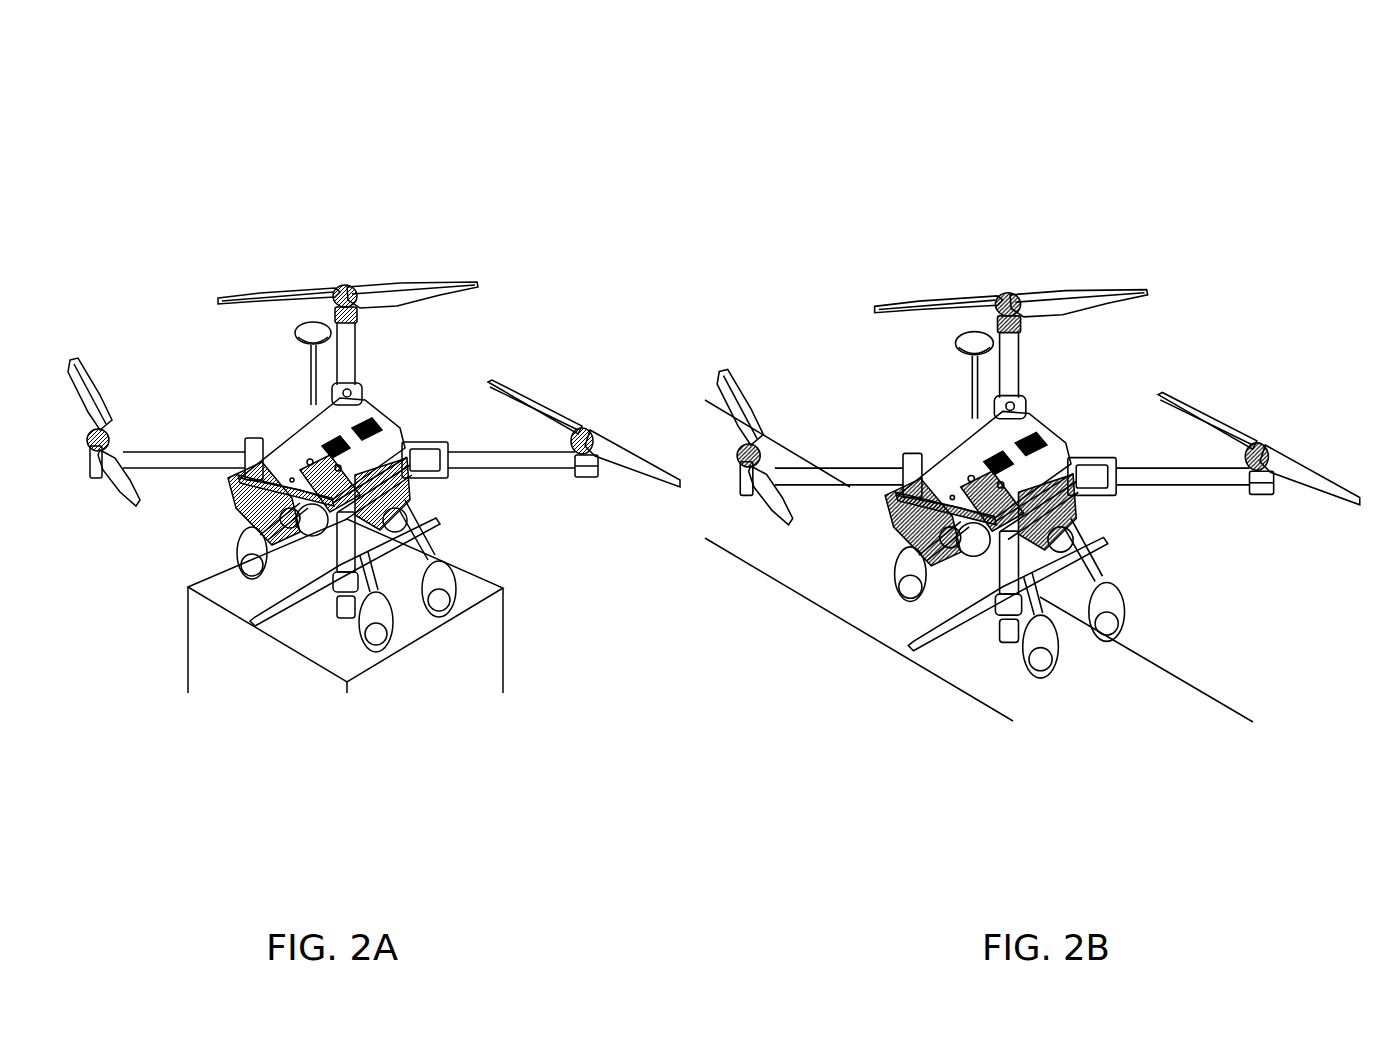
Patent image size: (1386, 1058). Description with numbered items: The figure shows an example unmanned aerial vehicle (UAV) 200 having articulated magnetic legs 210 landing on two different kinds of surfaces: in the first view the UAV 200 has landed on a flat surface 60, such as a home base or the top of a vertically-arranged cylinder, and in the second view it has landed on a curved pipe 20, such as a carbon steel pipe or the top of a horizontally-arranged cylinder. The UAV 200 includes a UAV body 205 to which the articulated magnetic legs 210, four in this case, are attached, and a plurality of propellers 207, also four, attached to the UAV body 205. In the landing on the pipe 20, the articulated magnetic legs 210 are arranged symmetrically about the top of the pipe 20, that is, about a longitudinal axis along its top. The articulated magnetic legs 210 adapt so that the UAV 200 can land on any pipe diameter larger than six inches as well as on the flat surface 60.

In FIG. 2A, the unmanned aerial vehicle (UAV) 200 is at (546, 209).
In FIG. 2B, the unmanned aerial vehicle (UAV) 200 is at (775, 220).
In FIG. 2A, the flat surface 60 is at (307, 635).
In FIG. 2B, the pipe 20 is at (819, 593).
In FIG. 2B, the UAV body 205 is at (1080, 512).
In FIG. 2B, the propeller 207 is at (1201, 408).
In FIG. 2B, the articulated magnetic leg 210 is at (1060, 670).